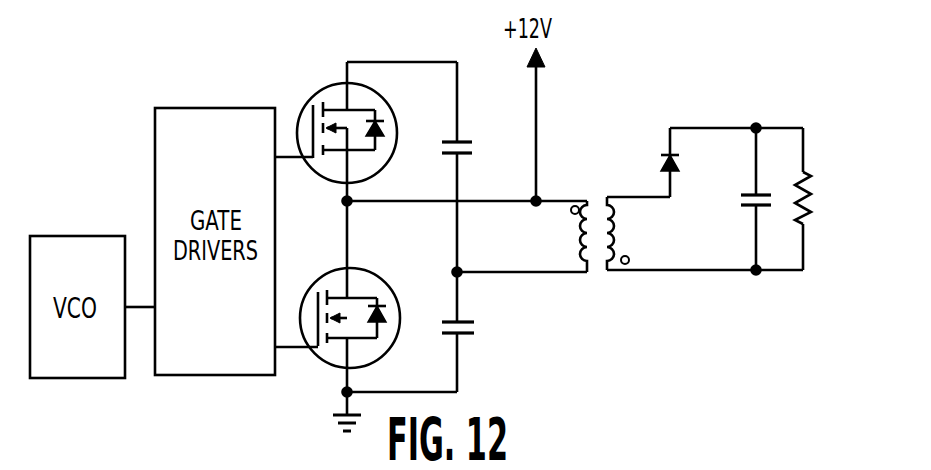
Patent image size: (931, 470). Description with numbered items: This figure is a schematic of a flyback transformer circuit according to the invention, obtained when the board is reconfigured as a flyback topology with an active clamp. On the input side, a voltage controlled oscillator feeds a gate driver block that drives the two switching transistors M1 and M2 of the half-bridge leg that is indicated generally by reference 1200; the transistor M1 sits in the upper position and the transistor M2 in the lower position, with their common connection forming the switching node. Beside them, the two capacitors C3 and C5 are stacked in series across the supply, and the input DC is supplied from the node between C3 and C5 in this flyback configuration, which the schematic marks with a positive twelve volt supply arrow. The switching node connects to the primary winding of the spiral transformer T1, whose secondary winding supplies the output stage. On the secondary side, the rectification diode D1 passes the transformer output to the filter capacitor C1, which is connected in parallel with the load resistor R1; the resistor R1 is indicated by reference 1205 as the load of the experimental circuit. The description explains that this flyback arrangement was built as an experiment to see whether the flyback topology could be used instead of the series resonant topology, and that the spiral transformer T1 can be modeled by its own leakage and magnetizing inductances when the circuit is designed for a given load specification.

The half-bridge inverter circuit 1200 is at (355, 53).
The load resistor R1 1205 is at (812, 192).
The MOSFET M1 is at (361, 180).
The MOSFET M2 is at (364, 336).
The capacitor C3 is at (474, 147).
The capacitor C5 is at (476, 330).
The transformer T1 is at (600, 219).
The diode D1 is at (658, 162).
The capacitor C1 is at (741, 199).
The resistor R1 is at (819, 199).